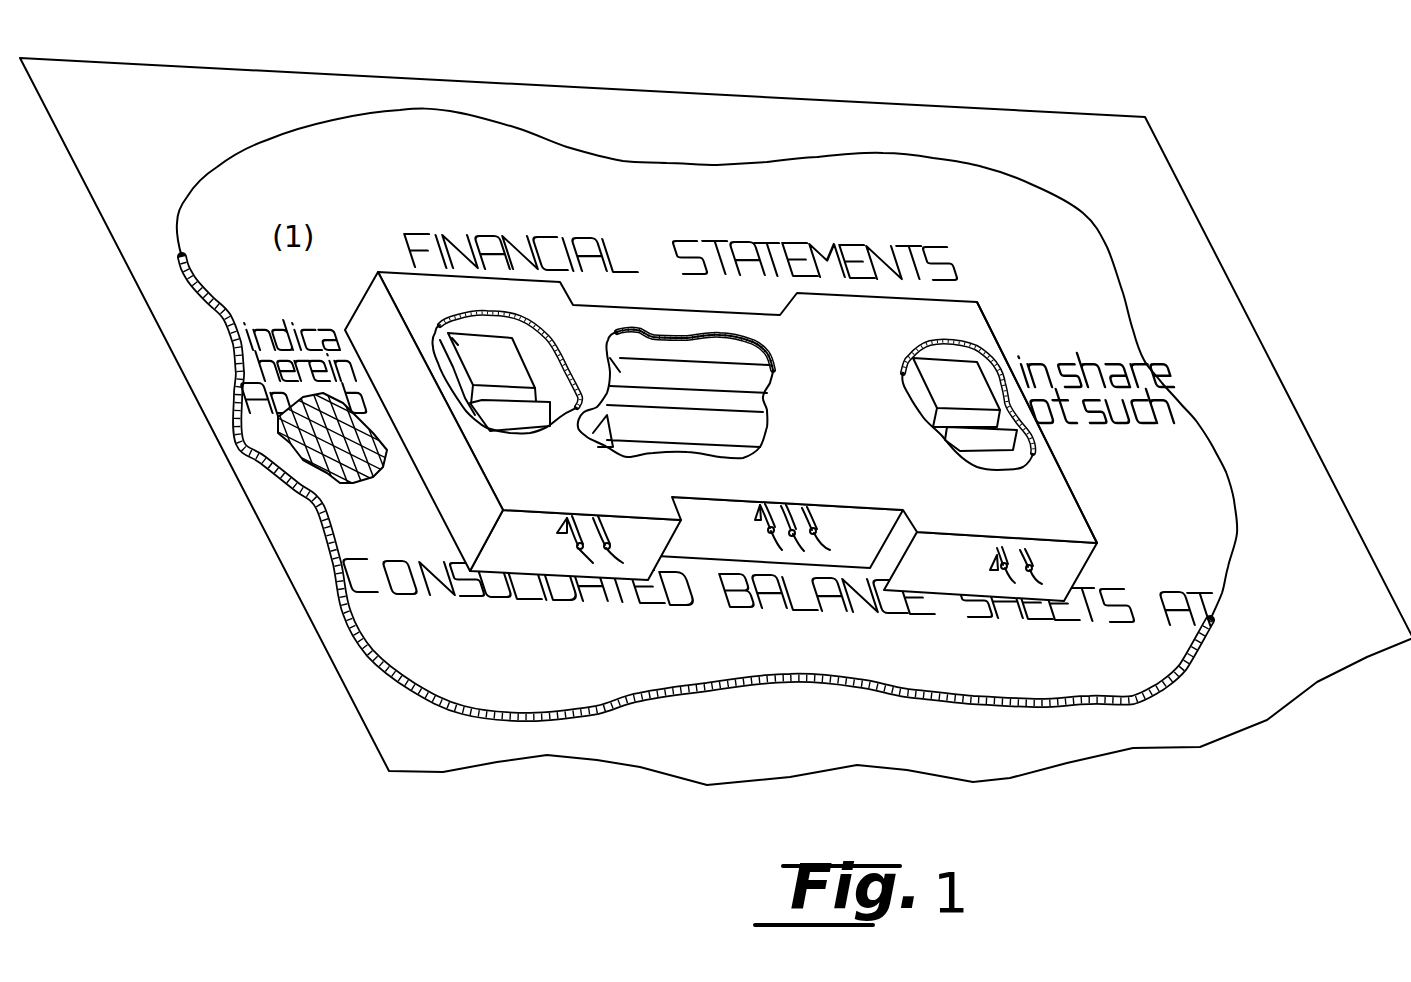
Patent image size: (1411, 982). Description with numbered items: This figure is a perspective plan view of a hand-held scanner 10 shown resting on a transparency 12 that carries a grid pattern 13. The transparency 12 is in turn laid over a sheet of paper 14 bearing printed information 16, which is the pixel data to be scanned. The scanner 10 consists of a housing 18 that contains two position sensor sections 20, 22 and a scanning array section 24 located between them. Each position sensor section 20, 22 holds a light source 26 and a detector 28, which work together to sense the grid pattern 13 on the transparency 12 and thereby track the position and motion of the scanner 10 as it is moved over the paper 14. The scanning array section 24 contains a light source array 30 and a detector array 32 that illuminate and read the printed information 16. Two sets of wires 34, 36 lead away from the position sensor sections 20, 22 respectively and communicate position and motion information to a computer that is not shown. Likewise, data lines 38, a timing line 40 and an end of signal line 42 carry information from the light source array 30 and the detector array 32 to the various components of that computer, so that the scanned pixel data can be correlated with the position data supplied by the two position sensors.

The scanner 10 is at (752, 443).
The transparency 12 is at (1190, 672).
The grid pattern 13 is at (303, 468).
The sheet of paper 14 is at (440, 80).
The printed information 16 is at (547, 231).
The housing 18 is at (975, 322).
The position sensor section 20 is at (440, 527).
The position sensor section 22 is at (1075, 518).
The scanning array section 24 is at (678, 542).
The light source 26 is at (1003, 450).
The detector 28 is at (460, 340).
The light source array 30 is at (680, 437).
The detector array 32 is at (455, 318).
The set of wires 34 is at (612, 585).
The set of wires 36 is at (1033, 578).
The data lines 38 is at (767, 548).
The timing line 40 is at (803, 555).
The end of signal line 42 is at (827, 545).